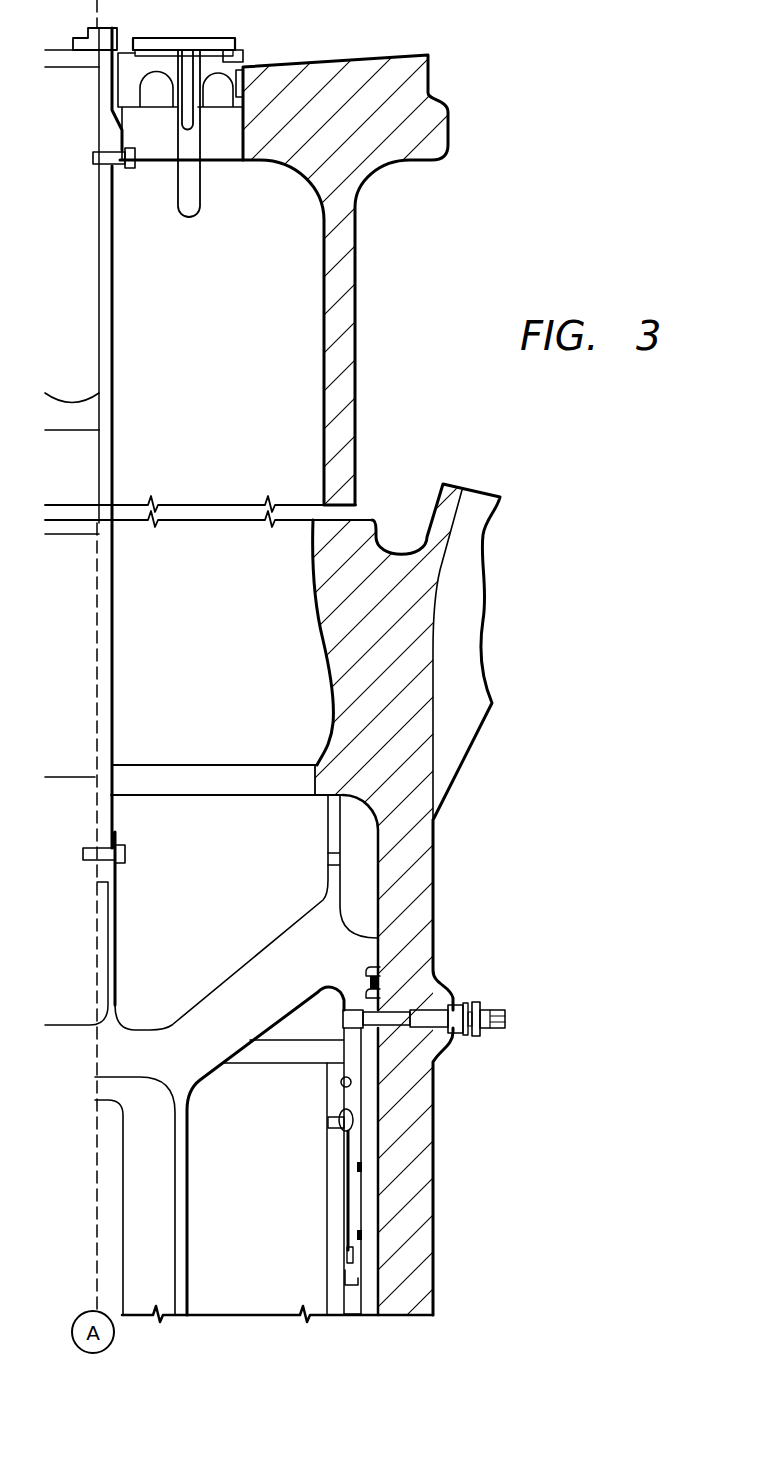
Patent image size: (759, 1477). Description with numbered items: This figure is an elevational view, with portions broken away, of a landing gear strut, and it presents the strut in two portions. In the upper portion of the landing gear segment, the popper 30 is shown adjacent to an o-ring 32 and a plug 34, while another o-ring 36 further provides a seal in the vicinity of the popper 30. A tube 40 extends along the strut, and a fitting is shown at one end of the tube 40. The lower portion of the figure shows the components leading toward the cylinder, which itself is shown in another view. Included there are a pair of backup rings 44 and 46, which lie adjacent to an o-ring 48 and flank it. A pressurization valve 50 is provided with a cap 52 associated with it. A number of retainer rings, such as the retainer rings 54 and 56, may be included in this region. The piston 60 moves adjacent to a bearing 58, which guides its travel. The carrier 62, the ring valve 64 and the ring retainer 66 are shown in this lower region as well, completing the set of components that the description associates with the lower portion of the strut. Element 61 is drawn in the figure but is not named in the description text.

The popper 30 is at (152, 35).
The o-ring 32 is at (247, 68).
The plug 34 is at (266, 62).
The o-ring 36 is at (112, 120).
The tube 40 is at (113, 262).
The backup ring 44 is at (368, 975).
The backup ring 46 is at (381, 993).
The o-ring 48 is at (342, 1007).
The pressurization valve 50 is at (446, 1042).
The cap 52 is at (500, 1008).
The retainer ring 54 is at (340, 1081).
The retainer ring 56 is at (362, 1167).
The bearing 58 is at (380, 1183).
The piston 60 is at (346, 1182).
The sensor element 61 is at (362, 1235).
The carrier 62 is at (347, 1250).
The ring valve 64 is at (356, 1305).
The ring retainer 66 is at (345, 1295).